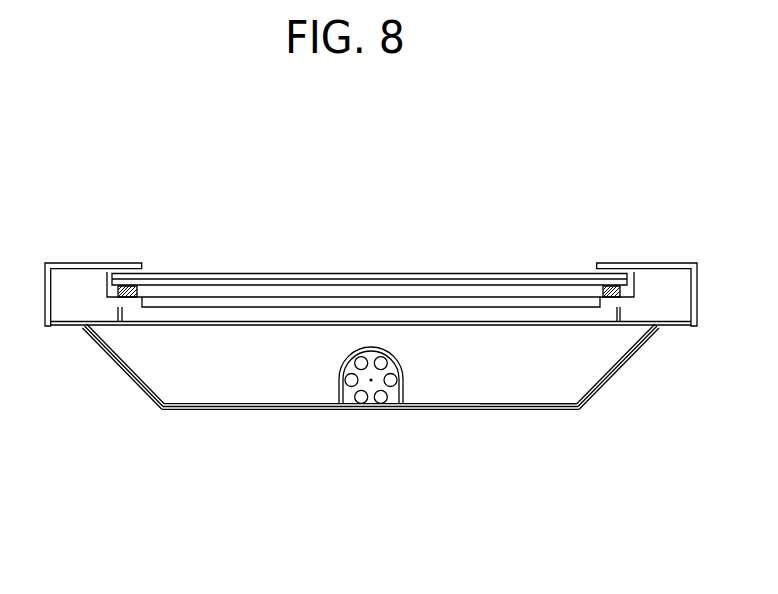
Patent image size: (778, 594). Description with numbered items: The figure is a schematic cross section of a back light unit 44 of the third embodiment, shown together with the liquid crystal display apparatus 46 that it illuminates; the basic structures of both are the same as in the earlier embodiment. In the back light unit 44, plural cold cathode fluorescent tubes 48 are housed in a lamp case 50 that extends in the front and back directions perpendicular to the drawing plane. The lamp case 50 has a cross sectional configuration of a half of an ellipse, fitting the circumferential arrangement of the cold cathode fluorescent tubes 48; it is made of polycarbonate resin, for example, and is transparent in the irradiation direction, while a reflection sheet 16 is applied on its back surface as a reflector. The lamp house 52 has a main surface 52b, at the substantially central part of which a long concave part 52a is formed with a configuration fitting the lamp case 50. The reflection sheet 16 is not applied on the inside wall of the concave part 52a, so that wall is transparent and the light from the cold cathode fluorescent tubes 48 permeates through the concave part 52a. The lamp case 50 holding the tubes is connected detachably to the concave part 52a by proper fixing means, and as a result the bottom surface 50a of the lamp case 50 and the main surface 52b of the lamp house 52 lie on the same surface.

The reflection sheet 16 is at (340, 407).
The back light unit 44 is at (106, 374).
The liquid crystal display apparatus 46 is at (160, 208).
The cold cathode fluorescent tubes 48 is at (360, 398).
The lamp case 50 is at (403, 398).
The bottom surface of the lamp case 50a is at (372, 408).
The lamp house 52 is at (192, 408).
The concave part 52a is at (340, 372).
The main surface of the lamp house 52b is at (538, 410).